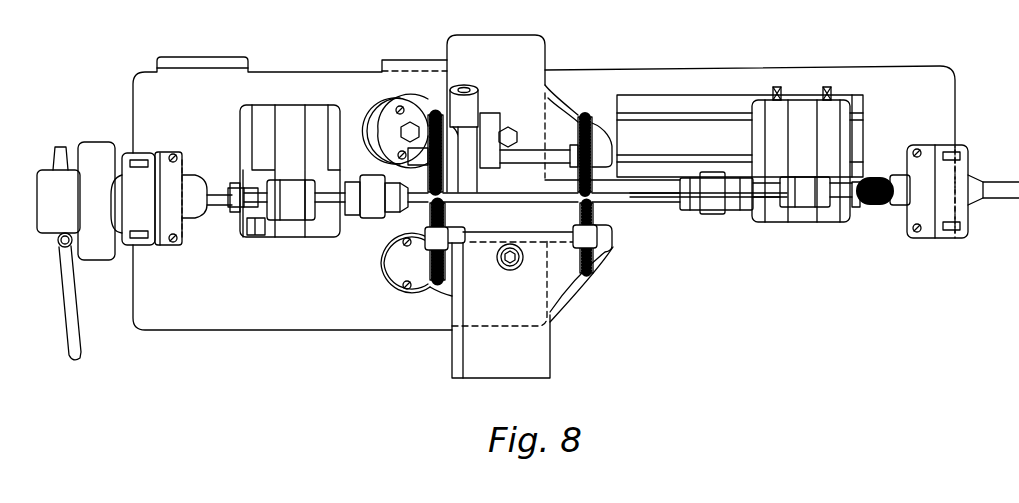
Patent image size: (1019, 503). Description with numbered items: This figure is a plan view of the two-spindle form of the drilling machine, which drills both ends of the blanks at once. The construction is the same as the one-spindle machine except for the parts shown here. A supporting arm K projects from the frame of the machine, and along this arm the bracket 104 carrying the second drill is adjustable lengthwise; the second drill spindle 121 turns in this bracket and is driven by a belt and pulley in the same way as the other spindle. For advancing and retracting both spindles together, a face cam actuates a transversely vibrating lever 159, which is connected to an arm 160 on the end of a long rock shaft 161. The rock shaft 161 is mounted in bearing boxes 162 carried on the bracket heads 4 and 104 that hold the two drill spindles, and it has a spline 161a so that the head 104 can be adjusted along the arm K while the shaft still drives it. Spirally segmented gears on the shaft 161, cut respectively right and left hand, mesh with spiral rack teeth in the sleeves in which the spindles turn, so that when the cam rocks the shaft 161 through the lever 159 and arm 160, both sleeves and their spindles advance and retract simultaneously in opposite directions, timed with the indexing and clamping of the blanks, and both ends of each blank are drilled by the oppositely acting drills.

The supporting arm K is at (725, 75).
The bracket head 4 is at (320, 112).
The bracket head 104 is at (833, 107).
The transversely vibrating lever 159 is at (246, 233).
The arm 160 is at (262, 226).
The bearing boxes 162 is at (300, 221).
The rock shaft 161 is at (612, 195).
The spline 161a is at (670, 196).
The spindle 121 is at (875, 199).